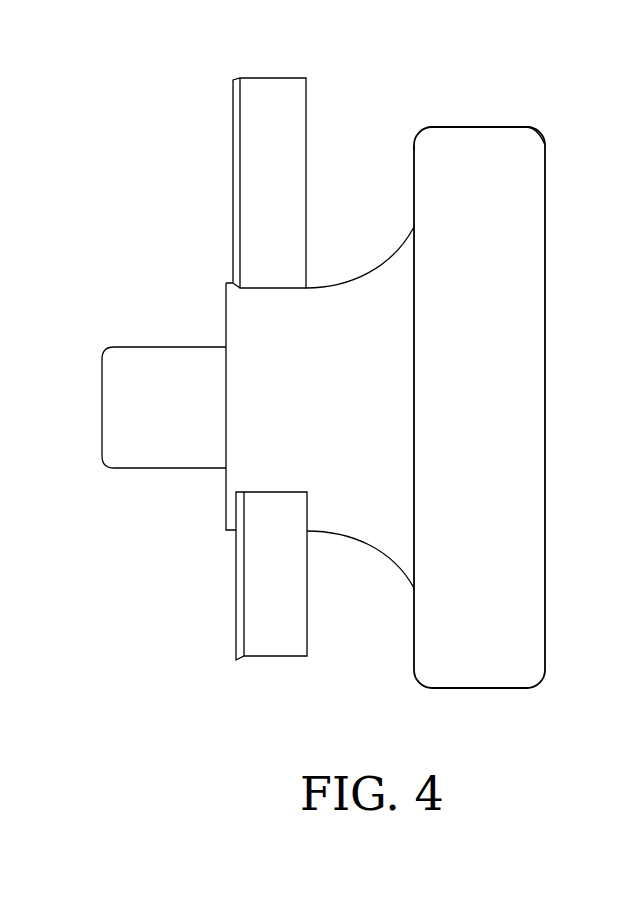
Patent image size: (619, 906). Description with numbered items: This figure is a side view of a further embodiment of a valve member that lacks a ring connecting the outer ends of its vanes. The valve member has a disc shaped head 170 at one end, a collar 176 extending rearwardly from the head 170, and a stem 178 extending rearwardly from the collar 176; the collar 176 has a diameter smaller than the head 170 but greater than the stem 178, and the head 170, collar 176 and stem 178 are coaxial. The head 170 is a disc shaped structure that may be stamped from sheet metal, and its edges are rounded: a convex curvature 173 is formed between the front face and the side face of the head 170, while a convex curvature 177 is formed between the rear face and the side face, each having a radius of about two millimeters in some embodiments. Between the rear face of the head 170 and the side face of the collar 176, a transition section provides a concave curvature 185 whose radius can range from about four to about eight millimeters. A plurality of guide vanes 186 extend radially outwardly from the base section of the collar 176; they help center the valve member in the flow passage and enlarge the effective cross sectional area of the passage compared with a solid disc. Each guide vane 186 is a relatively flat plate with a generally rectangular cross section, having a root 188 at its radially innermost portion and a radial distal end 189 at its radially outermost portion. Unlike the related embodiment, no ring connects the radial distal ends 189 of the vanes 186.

The head 170 is at (470, 127).
The convex curvature 173 is at (542, 132).
The collar 176 is at (375, 263).
The convex curvature 177 is at (415, 128).
The stem 178 is at (146, 347).
The concave curvature 185 is at (377, 548).
The guide vanes 186 is at (270, 78).
The root 188 is at (270, 494).
The radial distal end 189 is at (273, 662).